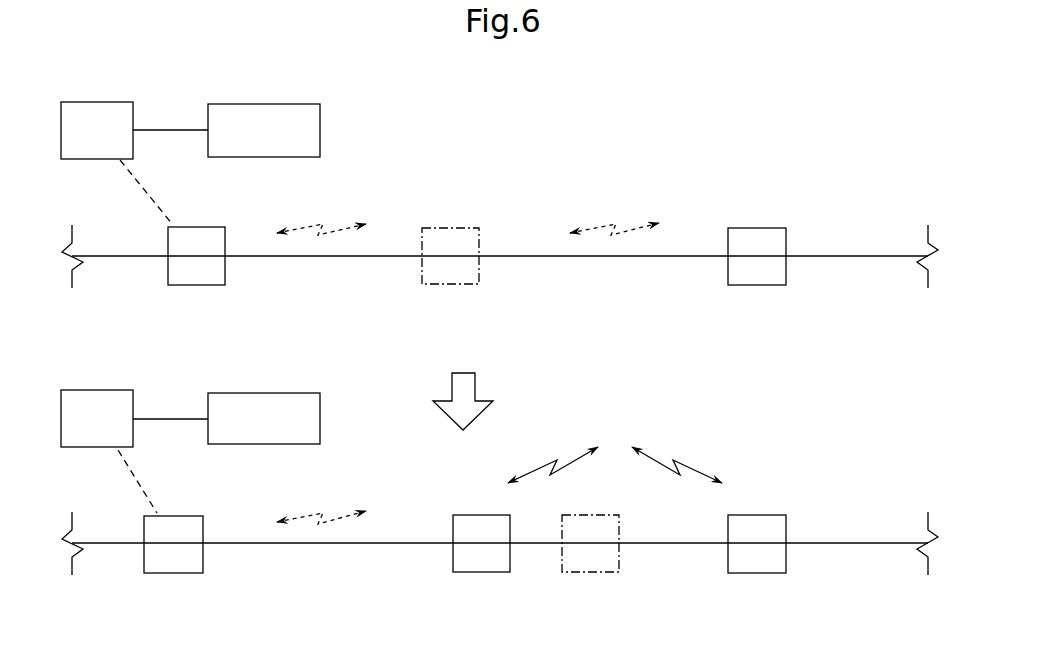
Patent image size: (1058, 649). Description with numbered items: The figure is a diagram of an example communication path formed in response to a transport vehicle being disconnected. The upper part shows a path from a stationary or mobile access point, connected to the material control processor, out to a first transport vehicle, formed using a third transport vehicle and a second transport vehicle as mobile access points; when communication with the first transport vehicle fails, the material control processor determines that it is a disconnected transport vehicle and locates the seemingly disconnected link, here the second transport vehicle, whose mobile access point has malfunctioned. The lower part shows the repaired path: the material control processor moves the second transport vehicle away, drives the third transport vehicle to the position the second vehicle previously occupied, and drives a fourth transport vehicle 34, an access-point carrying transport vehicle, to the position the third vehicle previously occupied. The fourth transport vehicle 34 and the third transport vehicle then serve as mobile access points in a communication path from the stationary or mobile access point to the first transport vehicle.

The fourth transport vehicle 34 is at (183, 516).